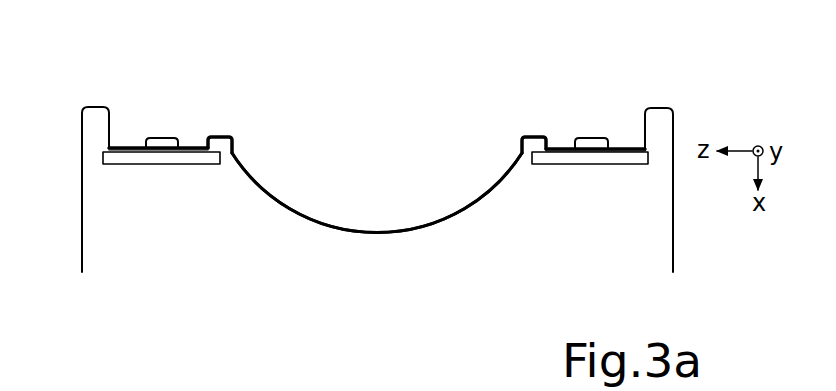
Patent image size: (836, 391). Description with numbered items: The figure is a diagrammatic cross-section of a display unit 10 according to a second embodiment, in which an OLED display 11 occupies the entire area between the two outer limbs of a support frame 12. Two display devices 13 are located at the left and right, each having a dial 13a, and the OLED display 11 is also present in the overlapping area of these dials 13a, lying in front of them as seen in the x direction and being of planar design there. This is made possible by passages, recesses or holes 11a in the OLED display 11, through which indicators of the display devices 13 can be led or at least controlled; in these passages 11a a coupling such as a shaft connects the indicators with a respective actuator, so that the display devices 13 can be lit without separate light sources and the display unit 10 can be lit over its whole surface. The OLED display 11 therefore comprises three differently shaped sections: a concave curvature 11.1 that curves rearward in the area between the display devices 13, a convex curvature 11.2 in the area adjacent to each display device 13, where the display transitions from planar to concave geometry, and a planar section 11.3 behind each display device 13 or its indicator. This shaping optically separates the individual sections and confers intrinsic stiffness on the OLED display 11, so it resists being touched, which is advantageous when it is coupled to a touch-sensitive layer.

The display unit 10 is at (393, 95).
The OLED display 11 is at (408, 233).
The concave curvature 11.1 is at (453, 217).
The convex curvature 11.2 is at (222, 137).
The planar section 11.3 is at (128, 148).
The passages 11a is at (157, 154).
The support frame 12 is at (95, 113).
The display devices 13 is at (173, 132).
The dial 13a is at (193, 164).